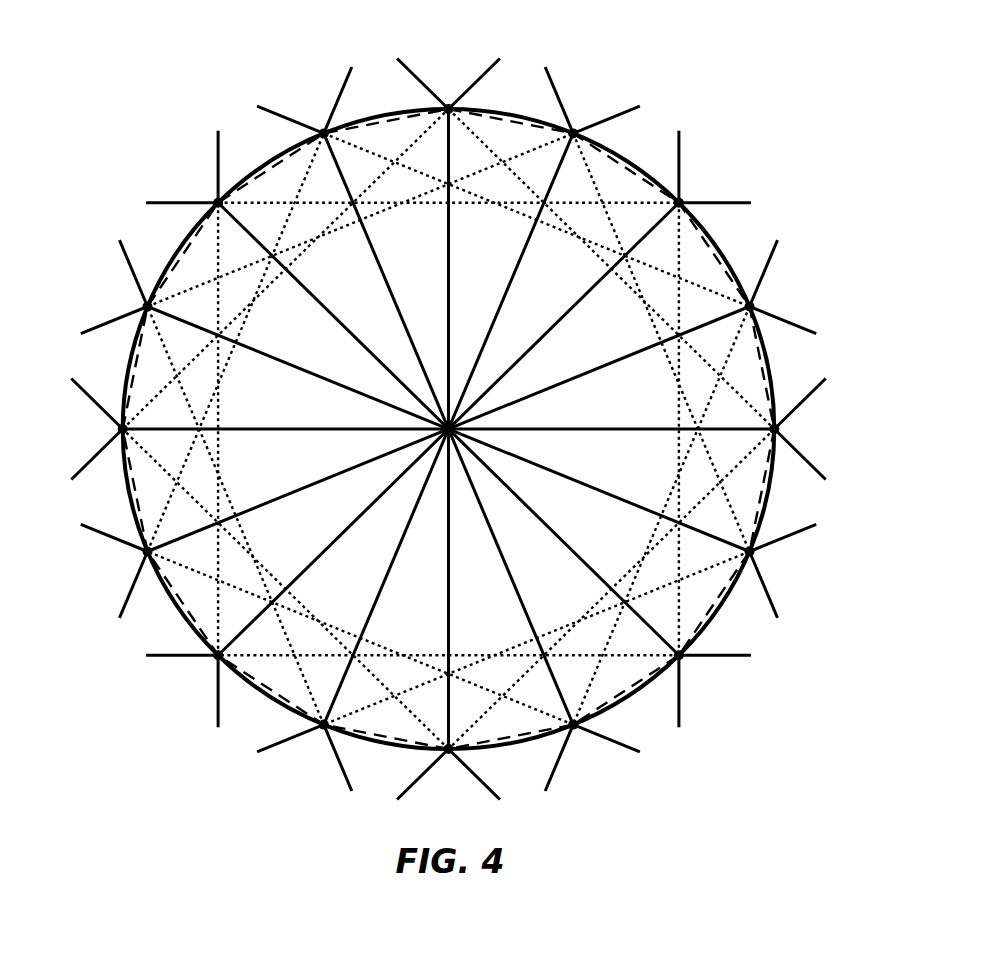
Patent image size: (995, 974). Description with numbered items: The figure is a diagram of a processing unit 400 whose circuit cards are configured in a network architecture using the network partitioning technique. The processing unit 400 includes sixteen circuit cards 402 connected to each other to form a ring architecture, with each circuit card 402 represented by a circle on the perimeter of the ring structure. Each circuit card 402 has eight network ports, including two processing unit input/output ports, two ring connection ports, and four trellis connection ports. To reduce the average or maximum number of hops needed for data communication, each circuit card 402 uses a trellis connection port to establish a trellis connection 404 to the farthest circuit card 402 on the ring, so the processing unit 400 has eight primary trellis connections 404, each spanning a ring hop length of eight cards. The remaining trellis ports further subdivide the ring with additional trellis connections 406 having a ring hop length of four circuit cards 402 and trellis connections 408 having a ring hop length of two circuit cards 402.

The processing unit 400 is at (174, 62).
The circuit card 402 is at (214, 205).
The trellis connection 404 is at (386, 285).
The trellis connection 406 is at (248, 315).
The trellis connection 408 is at (278, 177).